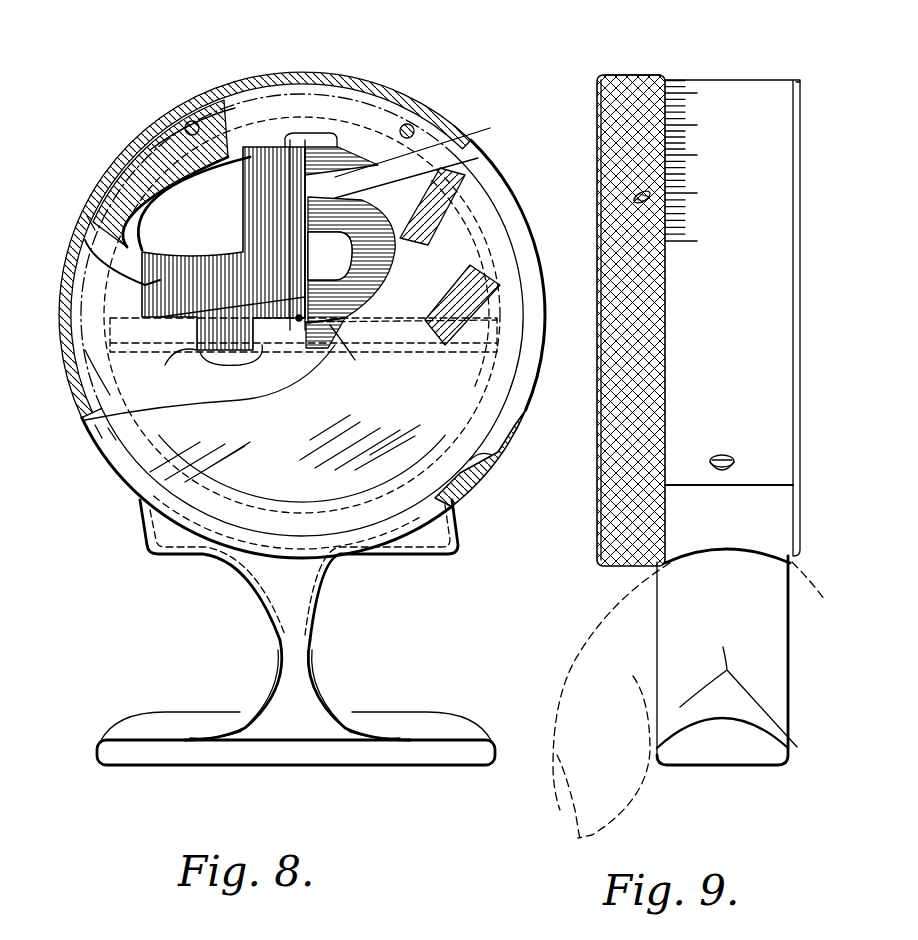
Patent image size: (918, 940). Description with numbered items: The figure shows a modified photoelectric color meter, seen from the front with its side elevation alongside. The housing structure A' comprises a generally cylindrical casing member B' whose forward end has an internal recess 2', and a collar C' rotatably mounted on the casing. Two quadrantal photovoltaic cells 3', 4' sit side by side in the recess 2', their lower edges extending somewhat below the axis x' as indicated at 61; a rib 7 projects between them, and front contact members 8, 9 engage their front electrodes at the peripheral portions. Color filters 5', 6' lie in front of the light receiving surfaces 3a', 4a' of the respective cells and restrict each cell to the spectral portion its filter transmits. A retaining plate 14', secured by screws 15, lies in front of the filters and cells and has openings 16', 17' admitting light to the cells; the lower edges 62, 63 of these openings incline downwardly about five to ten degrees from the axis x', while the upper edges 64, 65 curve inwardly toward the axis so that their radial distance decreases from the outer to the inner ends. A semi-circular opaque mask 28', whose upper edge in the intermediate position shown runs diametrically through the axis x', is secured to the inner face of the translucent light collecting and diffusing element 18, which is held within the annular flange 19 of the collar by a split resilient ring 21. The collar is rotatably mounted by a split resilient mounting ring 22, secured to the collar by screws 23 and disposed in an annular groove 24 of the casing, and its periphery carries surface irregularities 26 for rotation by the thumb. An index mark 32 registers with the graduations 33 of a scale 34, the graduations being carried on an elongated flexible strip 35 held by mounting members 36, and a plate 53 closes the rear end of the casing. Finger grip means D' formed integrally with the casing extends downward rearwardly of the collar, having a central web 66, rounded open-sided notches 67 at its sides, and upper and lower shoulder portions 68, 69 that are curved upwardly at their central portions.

In FIG. 8, the internal recess 2' is at (274, 104).
In FIG. 8, the front contact member 8 is at (236, 170).
In FIG. 8, the color filter 5' is at (223, 194).
In FIG. 8, the casing member B' is at (293, 291).
In FIG. 9, the casing member B' is at (732, 298).
In FIG. 8, the screws 15 is at (193, 121).
In FIG. 8, the retaining plate 14' is at (262, 226).
In FIG. 8, the opening 17' is at (424, 153).
In FIG. 8, the housing structure A' is at (302, 315).
In FIG. 9, the housing structure A' is at (756, 55).
In FIG. 8, the front contact member 9 is at (510, 186).
In FIG. 8, the split resilient mounting ring 22 is at (142, 143).
In FIG. 8, the upper edge of opening 64 is at (167, 158).
In FIG. 8, the photovoltaic cell 3' is at (154, 193).
In FIG. 8, the light receiving surface 3a' is at (149, 173).
In FIG. 8, the annular groove 24 is at (90, 222).
In FIG. 8, the opening 16' is at (97, 262).
In FIG. 8, the rib 7 is at (306, 245).
In FIG. 8, the light receiving surface 4a' is at (368, 222).
In FIG. 8, the photovoltaic cell 4' is at (358, 272).
In FIG. 8, the collar C' is at (330, 315).
In FIG. 9, the collar C' is at (611, 298).
In FIG. 8, the upper edge of opening 65 is at (465, 253).
In FIG. 8, the light collecting and diffusing element 18 is at (477, 287).
In FIG. 8, the lower edge of opening 62 is at (180, 340).
In FIG. 8, the lower edges of cells 61 is at (238, 345).
In FIG. 8, the axis x' is at (319, 358).
In FIG. 8, the color filter 6' is at (352, 358).
In FIG. 8, the lower edge of opening 63 is at (398, 342).
In FIG. 8, the semi-circular opaque mask 28' is at (68, 421).
In FIG. 8, the split resilient ring 21 is at (104, 428).
In FIG. 8, the annular flange 19 is at (378, 490).
In FIG. 8, the elongated flexible strip 35 is at (508, 436).
In FIG. 9, the elongated flexible strip 35 is at (693, 480).
In FIG. 8, the mounting members 36 is at (490, 470).
In FIG. 9, the mounting members 36 is at (726, 460).
In FIG. 8, the upper shoulder portion 68 is at (175, 557).
In FIG. 9, the upper shoulder portion 68 is at (710, 557).
In FIG. 8, the central web 66 is at (288, 638).
In FIG. 9, the central web 66 is at (665, 650).
In FIG. 8, the finger grip means D' is at (344, 643).
In FIG. 9, the finger grip means D' is at (602, 626).
In FIG. 8, the notches 67 is at (276, 675).
In FIG. 9, the notches 67 is at (727, 660).
In FIG. 8, the lower shoulder portion 69 is at (190, 736).
In FIG. 9, the lower shoulder portion 69 is at (724, 752).
In FIG. 9, the index mark 32 is at (652, 76).
In FIG. 9, the scale graduations 33 is at (677, 110).
In FIG. 9, the plate 53 is at (805, 80).
In FIG. 9, the screws 23 is at (640, 192).
In FIG. 9, the scale 34 is at (686, 252).
In FIG. 9, the surface irregularities 26 is at (600, 472).